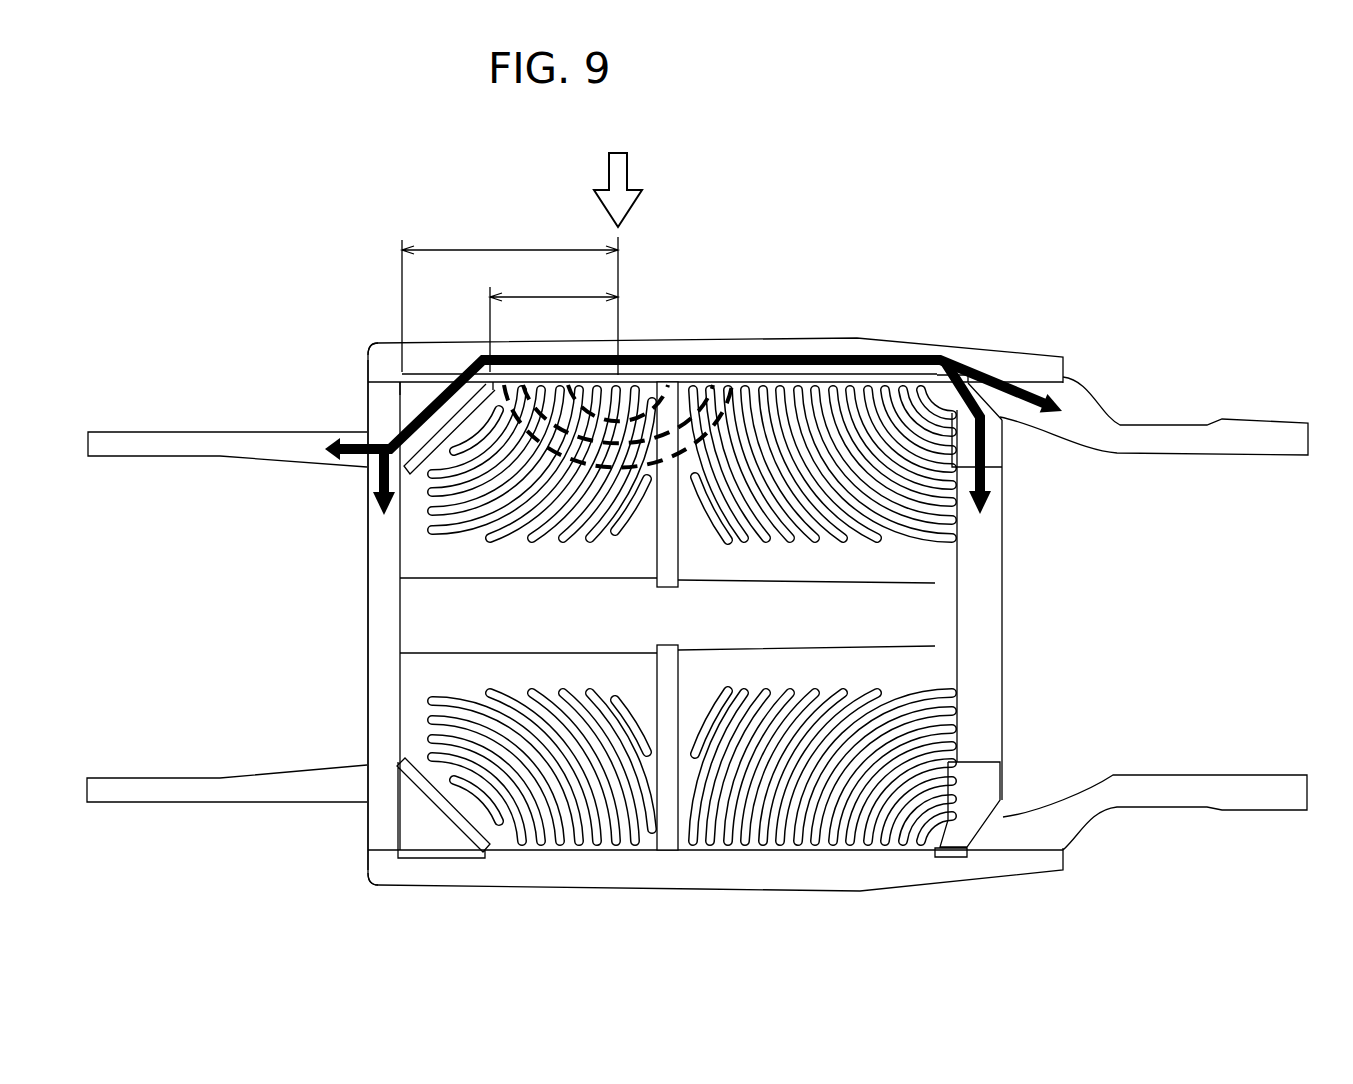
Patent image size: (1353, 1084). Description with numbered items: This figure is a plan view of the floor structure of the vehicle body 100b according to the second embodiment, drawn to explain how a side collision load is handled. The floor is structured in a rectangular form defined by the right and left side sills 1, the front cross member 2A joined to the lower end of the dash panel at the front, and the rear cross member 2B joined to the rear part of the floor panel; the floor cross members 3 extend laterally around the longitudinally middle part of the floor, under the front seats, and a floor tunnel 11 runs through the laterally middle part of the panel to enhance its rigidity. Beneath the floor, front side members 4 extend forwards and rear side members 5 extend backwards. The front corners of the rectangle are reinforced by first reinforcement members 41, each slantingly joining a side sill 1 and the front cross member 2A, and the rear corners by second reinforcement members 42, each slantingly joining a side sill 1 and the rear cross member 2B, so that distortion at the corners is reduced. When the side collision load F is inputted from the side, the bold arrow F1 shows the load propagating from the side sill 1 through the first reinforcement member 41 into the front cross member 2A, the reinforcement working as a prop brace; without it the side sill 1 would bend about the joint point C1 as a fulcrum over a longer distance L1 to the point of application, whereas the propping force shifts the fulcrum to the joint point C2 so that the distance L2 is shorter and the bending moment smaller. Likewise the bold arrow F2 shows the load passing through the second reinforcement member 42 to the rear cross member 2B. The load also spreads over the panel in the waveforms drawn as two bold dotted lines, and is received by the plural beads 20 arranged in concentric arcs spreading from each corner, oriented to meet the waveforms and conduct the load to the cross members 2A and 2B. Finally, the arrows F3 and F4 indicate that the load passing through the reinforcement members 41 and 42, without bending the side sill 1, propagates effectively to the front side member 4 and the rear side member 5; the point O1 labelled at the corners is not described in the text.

The side sill 1 is at (812, 345).
The front cross member 2A is at (375, 560).
The rear cross member 2B is at (982, 563).
The floor cross member 3 is at (657, 560).
The front side member 4 is at (222, 432).
The rear side member 5 is at (1185, 430).
The floor tunnel 11 is at (425, 617).
The bead 20 is at (500, 535).
The first reinforcement member 41 is at (415, 388).
The second reinforcement member 42 is at (997, 456).
The vehicle body 100b is at (984, 292).
The side collision load F is at (618, 171).
The bold arrow indicating load propagation to front cross member F1 is at (378, 482).
The bold arrow indicating load propagation to rear cross member F2 is at (987, 485).
The arrow indicating load propagation to front side member F3 is at (356, 432).
The arrow indicating load propagation to rear side member F4 is at (1040, 358).
The distance between point of application and joint point C1 L1 is at (510, 297).
The distance between point of application and joint point C2 L2 is at (554, 318).
The joint point C1 is at (402, 382).
The joint point C2 is at (493, 372).
The corner point O1 is at (368, 373).